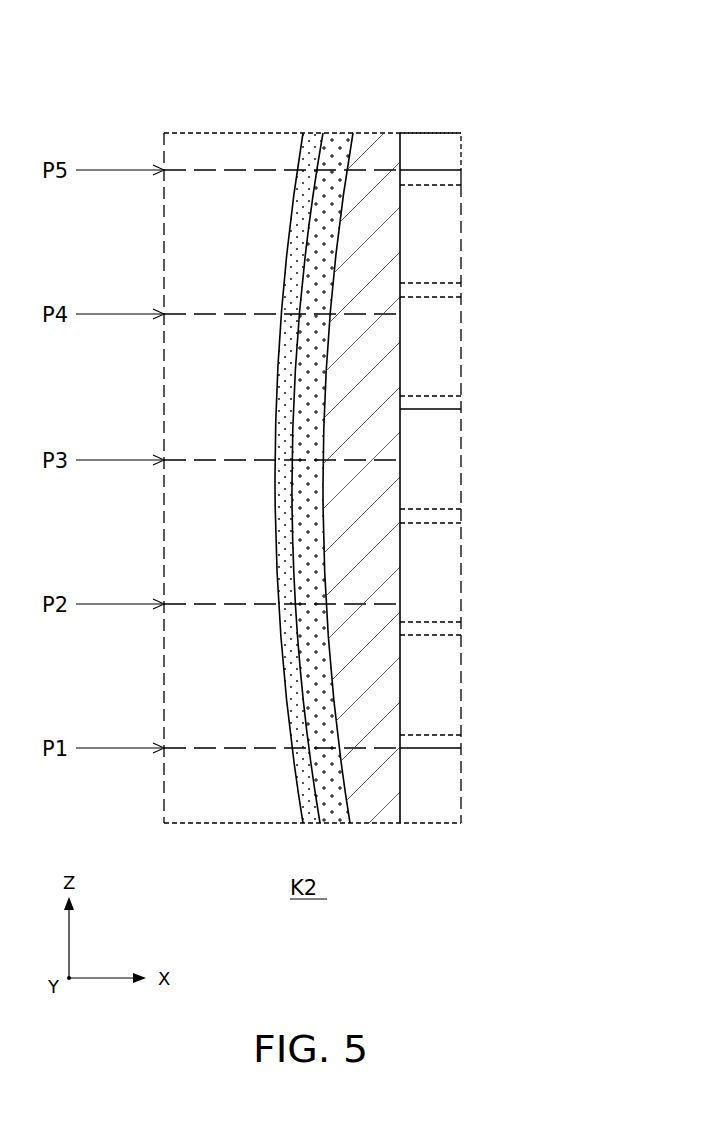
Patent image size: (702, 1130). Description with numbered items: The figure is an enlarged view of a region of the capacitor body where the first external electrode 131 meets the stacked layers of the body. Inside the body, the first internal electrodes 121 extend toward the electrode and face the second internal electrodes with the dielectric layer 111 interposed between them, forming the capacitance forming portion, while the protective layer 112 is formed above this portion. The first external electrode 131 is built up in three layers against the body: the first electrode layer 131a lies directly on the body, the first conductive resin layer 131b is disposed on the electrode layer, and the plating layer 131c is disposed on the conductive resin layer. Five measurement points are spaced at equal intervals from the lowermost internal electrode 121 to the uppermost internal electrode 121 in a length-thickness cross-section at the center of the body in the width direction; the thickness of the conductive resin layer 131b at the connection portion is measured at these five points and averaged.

The first external electrode 131 is at (418, 46).
The first electrode layer 131a is at (377, 140).
The first conductive resin layer 131b is at (338, 133).
The plating layer 131c is at (312, 133).
The protective layer 112 is at (448, 146).
The first internal electrode 121 is at (452, 178).
The dielectric layer 111 is at (448, 232).